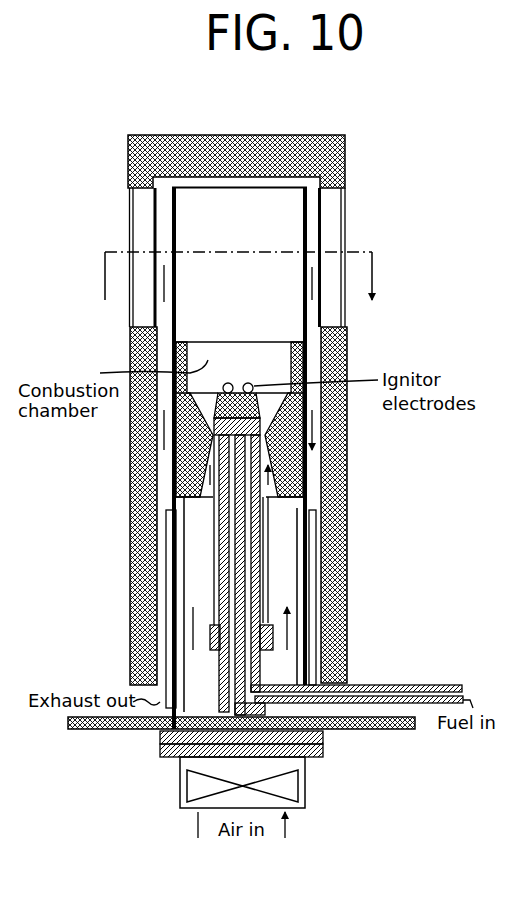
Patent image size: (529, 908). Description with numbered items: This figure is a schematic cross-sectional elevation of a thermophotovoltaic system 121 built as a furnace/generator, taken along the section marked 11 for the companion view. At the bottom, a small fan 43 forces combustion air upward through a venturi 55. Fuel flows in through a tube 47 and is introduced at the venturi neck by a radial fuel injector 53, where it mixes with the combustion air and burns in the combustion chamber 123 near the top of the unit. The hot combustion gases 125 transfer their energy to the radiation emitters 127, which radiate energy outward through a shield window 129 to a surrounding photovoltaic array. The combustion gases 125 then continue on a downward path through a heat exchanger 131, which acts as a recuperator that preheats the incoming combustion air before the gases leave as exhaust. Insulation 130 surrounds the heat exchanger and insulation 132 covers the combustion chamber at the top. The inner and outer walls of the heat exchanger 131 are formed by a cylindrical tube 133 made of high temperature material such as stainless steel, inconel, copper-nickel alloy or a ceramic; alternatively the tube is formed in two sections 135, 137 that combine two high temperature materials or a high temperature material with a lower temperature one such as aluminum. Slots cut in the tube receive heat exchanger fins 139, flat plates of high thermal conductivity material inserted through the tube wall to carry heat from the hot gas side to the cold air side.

The section line 11- 11 is at (236, 297).
The fan 43 is at (305, 793).
The tube 47 is at (405, 683).
The fuel injector 53 is at (307, 462).
The venturi 55 is at (300, 396).
The thermophotovoltaic (TPV) system 121 is at (392, 545).
The combustion chamber 123 is at (258, 304).
The combustion gases 125 is at (290, 200).
The radiation emitters 127 is at (322, 236).
The shield window 129 is at (341, 220).
The insulation 130 is at (133, 452).
The heat exchanger 131 is at (323, 510).
The insulation 132 is at (167, 135).
The cylindrical tube 133 is at (308, 600).
The tube section 135 is at (307, 647).
The tube section 137 is at (278, 547).
The heat exchanger fins 139 is at (287, 523).